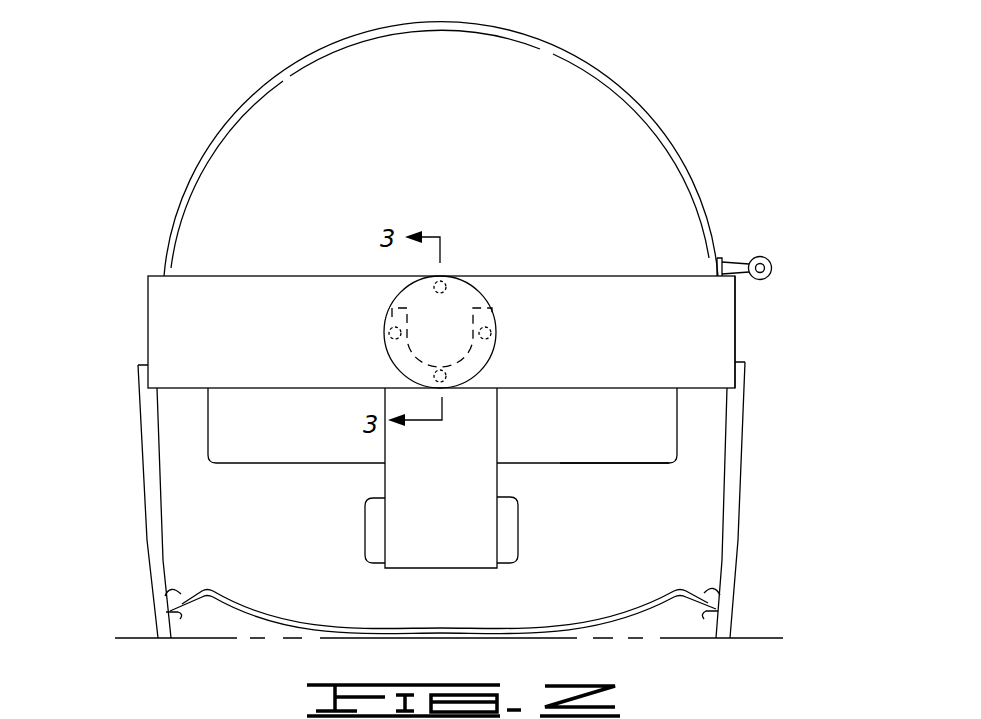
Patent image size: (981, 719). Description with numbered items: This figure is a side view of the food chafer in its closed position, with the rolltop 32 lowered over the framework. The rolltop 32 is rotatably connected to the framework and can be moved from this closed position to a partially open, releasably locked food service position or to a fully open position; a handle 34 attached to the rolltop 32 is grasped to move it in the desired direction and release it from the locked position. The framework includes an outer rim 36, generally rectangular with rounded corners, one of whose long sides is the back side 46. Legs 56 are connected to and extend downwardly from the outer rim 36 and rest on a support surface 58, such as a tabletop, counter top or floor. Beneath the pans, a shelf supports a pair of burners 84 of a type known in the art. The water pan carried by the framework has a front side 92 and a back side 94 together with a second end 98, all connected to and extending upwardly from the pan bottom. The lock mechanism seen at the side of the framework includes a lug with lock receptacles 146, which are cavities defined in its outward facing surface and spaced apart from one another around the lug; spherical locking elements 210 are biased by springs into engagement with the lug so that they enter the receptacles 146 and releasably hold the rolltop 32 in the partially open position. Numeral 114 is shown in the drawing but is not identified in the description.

The rolltop 32 is at (580, 61).
The handle 34 is at (762, 256).
The outer rim 36 is at (735, 317).
The back side 46 is at (148, 312).
The legs 56 is at (143, 528).
The support surface 58 is at (762, 636).
The burners 84 is at (365, 523).
The front side 92 is at (677, 427).
The back side 94 is at (207, 430).
The second end 98 is at (602, 453).
The base member 114 is at (137, 718).
The lock receptacles 146 is at (447, 272).
The locking elements 210 is at (390, 331).